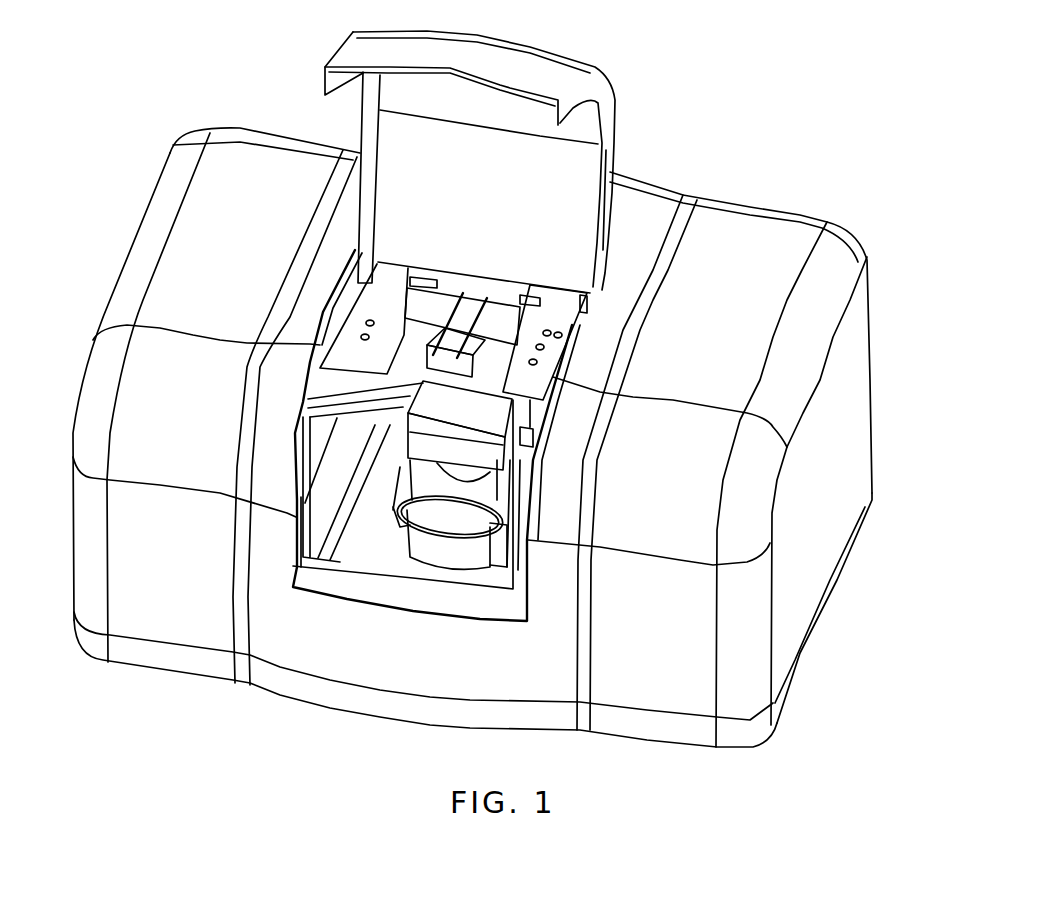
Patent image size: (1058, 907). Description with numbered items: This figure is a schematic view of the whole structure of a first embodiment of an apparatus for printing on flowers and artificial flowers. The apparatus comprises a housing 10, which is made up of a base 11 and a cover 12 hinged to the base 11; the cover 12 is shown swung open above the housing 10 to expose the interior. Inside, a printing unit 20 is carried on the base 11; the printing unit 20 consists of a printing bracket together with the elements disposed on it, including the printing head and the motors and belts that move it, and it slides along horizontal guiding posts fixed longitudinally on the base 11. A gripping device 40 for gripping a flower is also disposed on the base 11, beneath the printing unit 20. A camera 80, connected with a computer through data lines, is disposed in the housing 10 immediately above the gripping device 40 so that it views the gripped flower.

The housing 10 is at (820, 228).
The base 11 is at (797, 695).
The cover 12 is at (600, 128).
The printing unit 20 is at (482, 415).
The gripping device 40 is at (505, 543).
The camera 80 is at (457, 358).